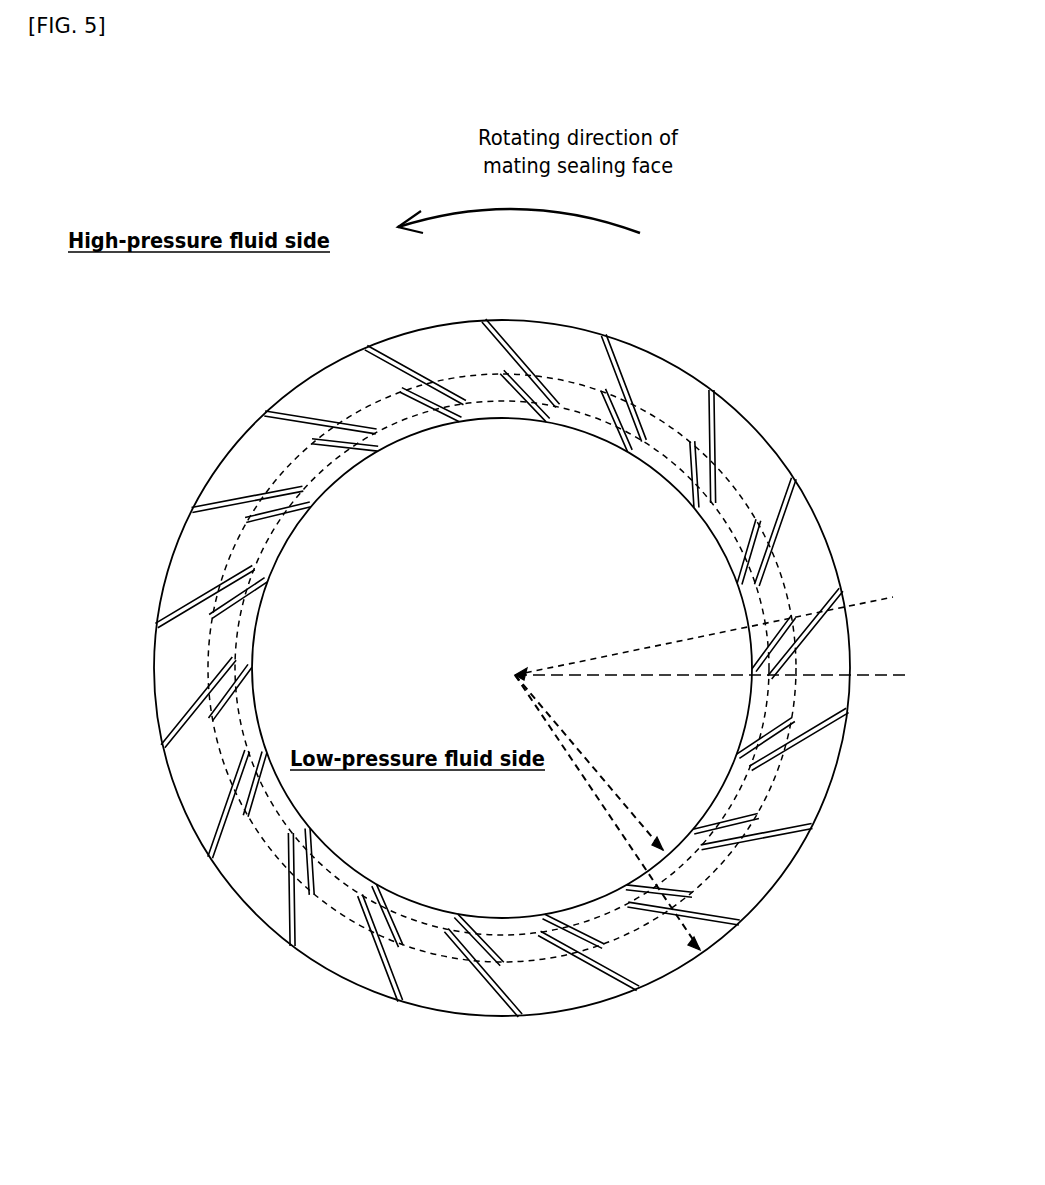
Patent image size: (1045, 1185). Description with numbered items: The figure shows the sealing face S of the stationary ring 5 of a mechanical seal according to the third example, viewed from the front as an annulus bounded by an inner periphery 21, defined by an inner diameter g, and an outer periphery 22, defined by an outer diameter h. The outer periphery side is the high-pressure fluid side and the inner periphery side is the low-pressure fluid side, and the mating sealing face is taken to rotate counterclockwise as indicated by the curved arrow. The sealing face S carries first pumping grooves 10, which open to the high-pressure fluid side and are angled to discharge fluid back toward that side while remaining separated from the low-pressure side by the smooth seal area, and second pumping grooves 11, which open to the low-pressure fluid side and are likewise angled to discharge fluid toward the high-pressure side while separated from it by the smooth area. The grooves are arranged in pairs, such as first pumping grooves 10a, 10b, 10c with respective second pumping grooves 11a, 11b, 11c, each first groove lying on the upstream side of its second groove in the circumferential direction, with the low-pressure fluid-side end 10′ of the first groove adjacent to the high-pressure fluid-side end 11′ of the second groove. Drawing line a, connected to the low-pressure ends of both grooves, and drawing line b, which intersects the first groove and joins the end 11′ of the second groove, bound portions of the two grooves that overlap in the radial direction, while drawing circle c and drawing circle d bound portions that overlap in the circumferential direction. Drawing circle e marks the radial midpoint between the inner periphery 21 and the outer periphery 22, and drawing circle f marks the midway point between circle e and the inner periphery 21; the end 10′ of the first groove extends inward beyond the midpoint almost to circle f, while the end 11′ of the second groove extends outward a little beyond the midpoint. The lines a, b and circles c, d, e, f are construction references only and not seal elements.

The stationary ring 5 is at (539, 666).
The sealing face S is at (652, 375).
The inner periphery 21 is at (725, 777).
The outer periphery 22 is at (835, 763).
The first pumping groove 10 is at (470, 640).
The first pumping groove 10a is at (340, 383).
The first pumping groove 10b is at (290, 415).
The first pumping groove 10c is at (205, 472).
The low-pressure fluid-side end of the first pumping groove 10′ is at (290, 478).
The second pumping groove 11 is at (564, 667).
The second pumping groove 11a is at (443, 433).
The second pumping groove 11b is at (320, 427).
The second pumping groove 11c is at (240, 487).
The high-pressure fluid-side end of the second pumping groove 11′ is at (282, 575).
The drawing line a is at (885, 675).
The drawing line b is at (877, 597).
The drawing circle c is at (767, 613).
The drawing circle d is at (780, 557).
The drawing circle e is at (747, 493).
The drawing circle f is at (758, 600).
The inner diameter g is at (589, 762).
The outer diameter h is at (607, 812).